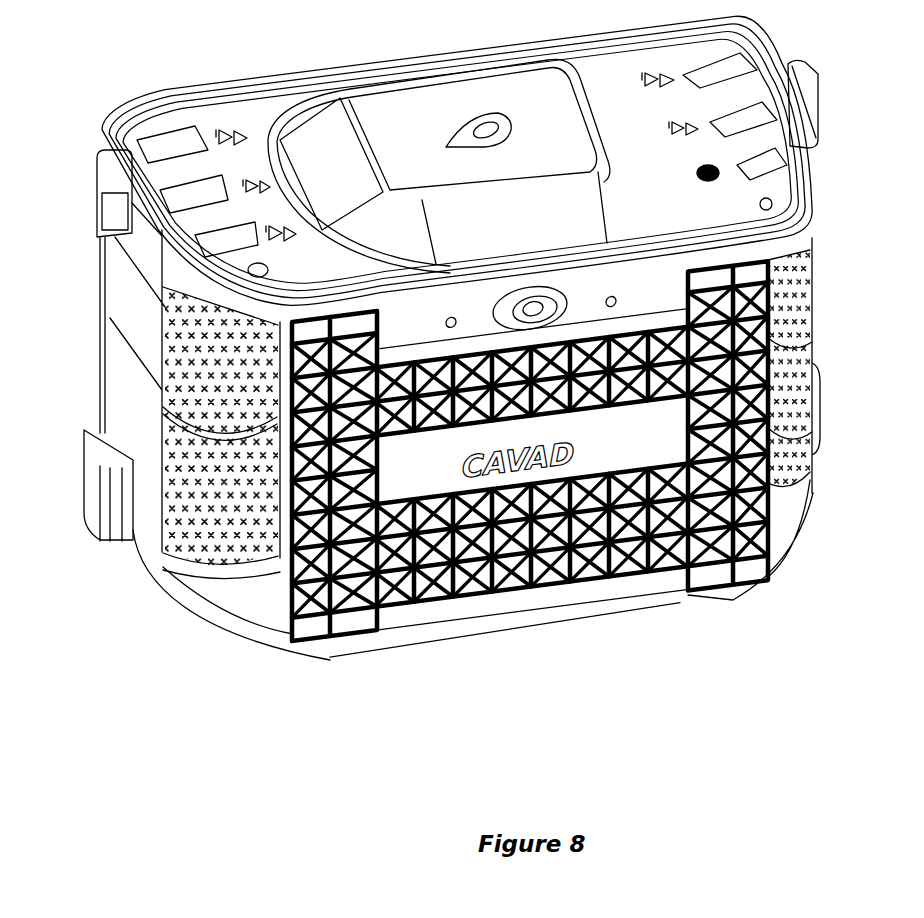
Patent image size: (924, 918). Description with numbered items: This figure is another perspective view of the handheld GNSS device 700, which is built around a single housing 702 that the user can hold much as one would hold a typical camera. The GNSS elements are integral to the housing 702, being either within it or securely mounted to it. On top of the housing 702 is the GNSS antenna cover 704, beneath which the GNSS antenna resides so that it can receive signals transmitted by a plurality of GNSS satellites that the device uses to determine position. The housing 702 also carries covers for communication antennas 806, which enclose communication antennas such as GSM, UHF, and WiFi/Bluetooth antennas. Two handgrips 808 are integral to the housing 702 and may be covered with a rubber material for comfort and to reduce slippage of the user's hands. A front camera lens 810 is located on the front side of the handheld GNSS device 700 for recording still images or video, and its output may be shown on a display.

The handheld GNSS device 700 is at (412, 43).
The housing 702 is at (123, 268).
The GNSS antenna cover 704 is at (562, 142).
The covers for communication antennas 806 is at (718, 462).
The handgrip 808 is at (160, 383).
The front camera lens 810 is at (567, 318).